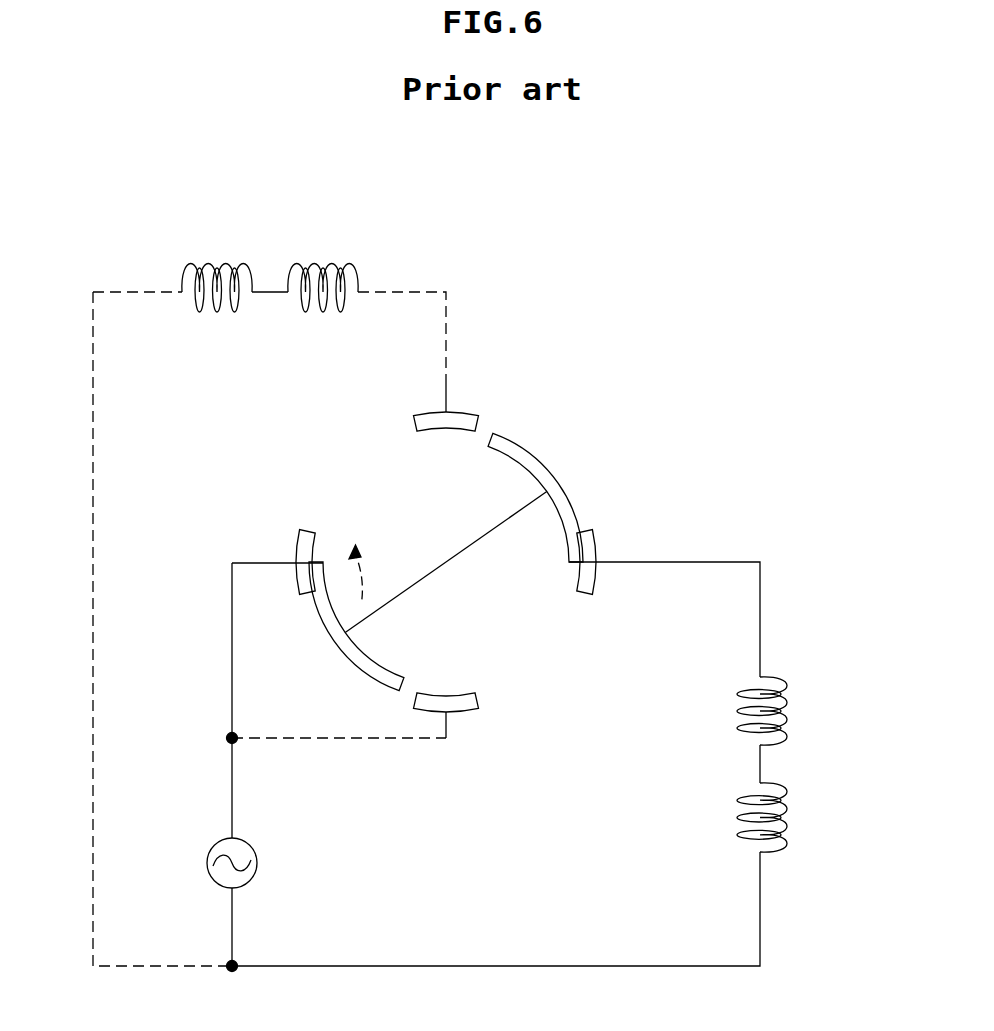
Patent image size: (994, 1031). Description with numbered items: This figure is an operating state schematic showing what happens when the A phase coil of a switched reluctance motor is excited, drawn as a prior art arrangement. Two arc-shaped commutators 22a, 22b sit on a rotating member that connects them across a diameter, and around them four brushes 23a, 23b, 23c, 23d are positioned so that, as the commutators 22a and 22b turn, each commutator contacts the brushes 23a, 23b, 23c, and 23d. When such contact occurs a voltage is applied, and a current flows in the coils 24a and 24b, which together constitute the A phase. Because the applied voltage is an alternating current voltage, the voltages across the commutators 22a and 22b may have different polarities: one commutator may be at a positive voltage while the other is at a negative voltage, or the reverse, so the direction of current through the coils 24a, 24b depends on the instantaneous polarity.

The commutator 22a is at (382, 676).
The commutator 22b is at (528, 462).
The brush 23a is at (298, 540).
The brush 23b is at (593, 547).
The brush 23c is at (465, 418).
The brush 23d is at (458, 707).
The coil 24a is at (785, 808).
The coil 24b is at (315, 263).